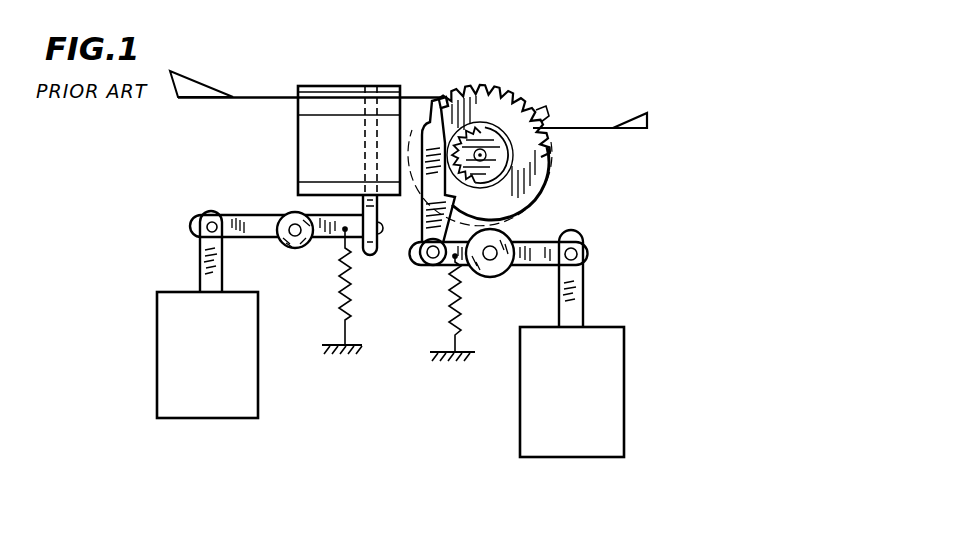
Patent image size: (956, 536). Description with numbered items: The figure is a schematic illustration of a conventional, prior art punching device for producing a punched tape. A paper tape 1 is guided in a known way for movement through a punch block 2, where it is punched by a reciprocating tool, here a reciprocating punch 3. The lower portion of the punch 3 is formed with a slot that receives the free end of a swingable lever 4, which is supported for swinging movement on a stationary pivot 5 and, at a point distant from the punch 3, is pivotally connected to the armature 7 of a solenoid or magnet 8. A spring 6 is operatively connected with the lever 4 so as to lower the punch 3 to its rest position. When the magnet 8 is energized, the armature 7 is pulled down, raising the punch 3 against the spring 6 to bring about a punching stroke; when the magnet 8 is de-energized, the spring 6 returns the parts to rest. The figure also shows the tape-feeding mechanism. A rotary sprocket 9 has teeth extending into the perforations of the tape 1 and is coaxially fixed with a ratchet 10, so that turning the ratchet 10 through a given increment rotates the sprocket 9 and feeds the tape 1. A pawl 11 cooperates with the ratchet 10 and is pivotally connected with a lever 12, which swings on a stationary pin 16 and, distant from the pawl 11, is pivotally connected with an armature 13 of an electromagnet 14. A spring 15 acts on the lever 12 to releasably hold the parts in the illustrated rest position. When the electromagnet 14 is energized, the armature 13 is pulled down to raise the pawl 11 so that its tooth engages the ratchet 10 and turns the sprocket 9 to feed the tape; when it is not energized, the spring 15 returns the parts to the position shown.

The paper tape 1 is at (192, 86).
The punch block 2 is at (340, 85).
The reciprocating punch 3 is at (372, 258).
The swingable lever 4 is at (322, 243).
The stationary pivot 5 is at (290, 222).
The spring 6 is at (345, 312).
The armature 7 is at (205, 266).
The magnet 8 is at (212, 408).
The rotary sprocket 9 is at (540, 113).
The ratchet 10 is at (487, 132).
The pawl 11 is at (433, 130).
The lever 12 is at (533, 247).
The armature 13 is at (580, 292).
The electromagnet 14 is at (623, 356).
The spring 15 is at (447, 300).
The stationary pin 16 is at (492, 267).